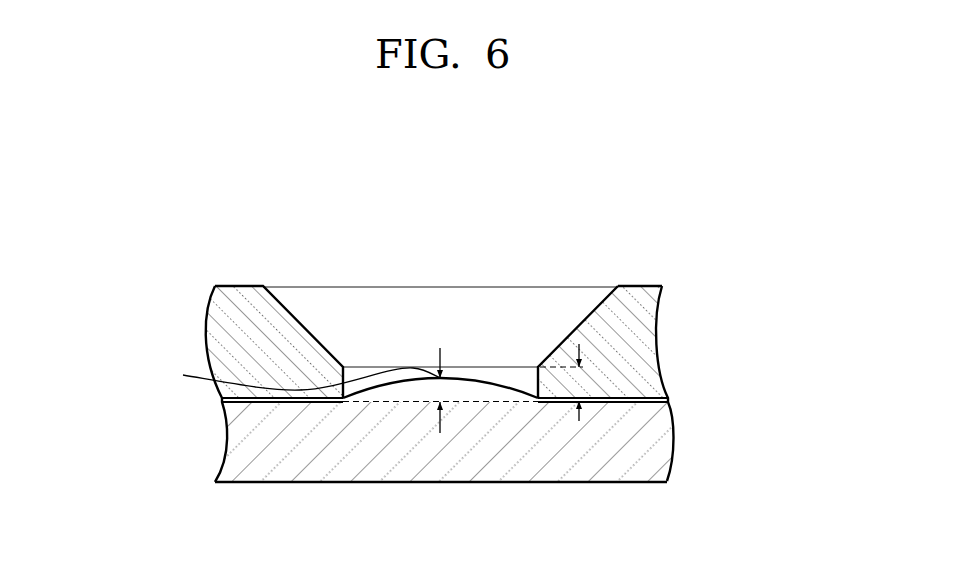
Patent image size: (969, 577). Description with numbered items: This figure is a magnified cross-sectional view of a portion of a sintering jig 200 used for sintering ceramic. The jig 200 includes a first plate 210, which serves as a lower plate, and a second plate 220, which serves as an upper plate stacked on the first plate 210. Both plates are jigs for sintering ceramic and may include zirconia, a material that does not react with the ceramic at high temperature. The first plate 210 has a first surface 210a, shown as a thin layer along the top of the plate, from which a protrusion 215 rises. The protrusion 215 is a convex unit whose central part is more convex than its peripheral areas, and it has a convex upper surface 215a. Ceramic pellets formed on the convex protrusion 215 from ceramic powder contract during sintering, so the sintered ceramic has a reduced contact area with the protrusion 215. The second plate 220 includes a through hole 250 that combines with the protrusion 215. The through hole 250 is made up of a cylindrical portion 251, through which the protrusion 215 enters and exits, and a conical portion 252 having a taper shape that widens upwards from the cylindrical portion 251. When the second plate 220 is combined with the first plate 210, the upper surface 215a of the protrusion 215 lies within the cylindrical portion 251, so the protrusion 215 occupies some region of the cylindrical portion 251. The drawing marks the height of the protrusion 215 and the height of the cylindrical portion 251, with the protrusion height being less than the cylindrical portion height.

The sintering jig 200 is at (603, 240).
The first plate 210 is at (662, 447).
The first surface 210a is at (627, 402).
The protrusion 215 is at (447, 388).
The upper surface 215a is at (285, 376).
The second plate 220 is at (647, 348).
The through hole 250 is at (525, 201).
The cylindrical portion 251 is at (470, 370).
The conical portion 252 is at (512, 326).